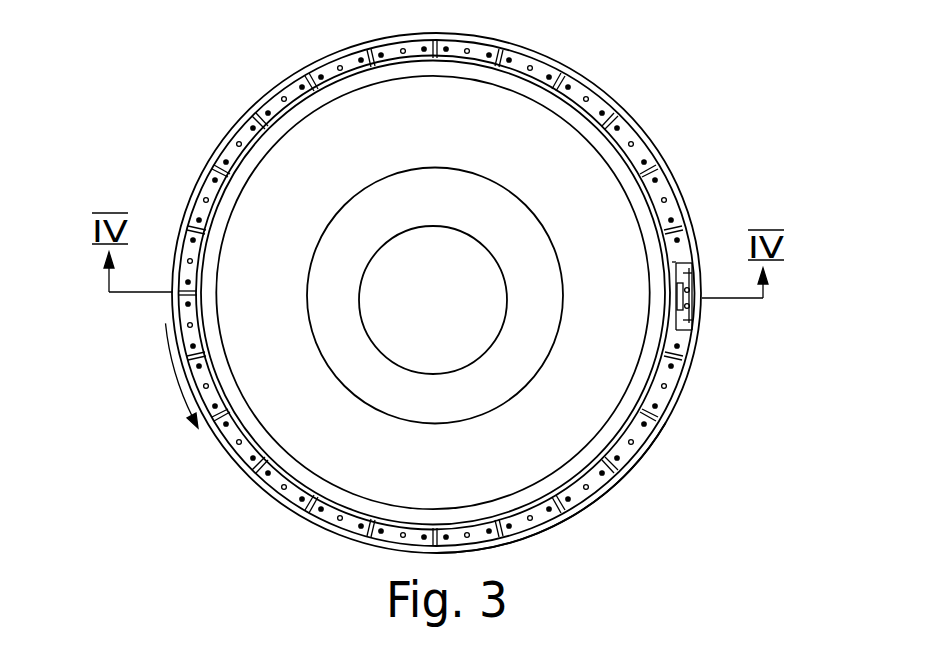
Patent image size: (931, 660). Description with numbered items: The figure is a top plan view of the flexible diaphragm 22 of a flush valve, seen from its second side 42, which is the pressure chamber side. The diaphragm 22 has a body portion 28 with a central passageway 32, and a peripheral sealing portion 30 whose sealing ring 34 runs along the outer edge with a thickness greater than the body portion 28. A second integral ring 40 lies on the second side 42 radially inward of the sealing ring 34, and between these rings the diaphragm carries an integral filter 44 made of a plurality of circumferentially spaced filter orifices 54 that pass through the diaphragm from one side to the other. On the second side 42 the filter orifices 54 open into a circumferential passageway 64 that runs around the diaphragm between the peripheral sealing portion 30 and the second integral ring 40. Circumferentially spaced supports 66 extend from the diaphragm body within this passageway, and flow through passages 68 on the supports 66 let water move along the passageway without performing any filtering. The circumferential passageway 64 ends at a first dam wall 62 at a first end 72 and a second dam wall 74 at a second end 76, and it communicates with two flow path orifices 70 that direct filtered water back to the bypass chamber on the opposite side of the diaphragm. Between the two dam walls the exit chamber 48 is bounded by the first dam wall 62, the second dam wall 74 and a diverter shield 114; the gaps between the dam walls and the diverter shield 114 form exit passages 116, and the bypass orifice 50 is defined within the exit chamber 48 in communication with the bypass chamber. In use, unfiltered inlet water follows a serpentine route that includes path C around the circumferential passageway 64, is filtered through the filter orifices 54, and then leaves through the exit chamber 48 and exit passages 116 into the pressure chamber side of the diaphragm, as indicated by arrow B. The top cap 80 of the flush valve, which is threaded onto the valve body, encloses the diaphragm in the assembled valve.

The flexible diaphragm 22 is at (212, 125).
The body portion 28 is at (347, 232).
The peripheral sealing portion 30 is at (247, 467).
The central passageway 32 is at (424, 334).
The sealing ring 34 is at (538, 545).
The second integral ring 40 is at (658, 386).
The second side 42 is at (335, 128).
The integral filter 44 is at (553, 57).
The exit chamber 48 is at (693, 306).
The bypass orifice 50 is at (690, 278).
The filter orifices 54 is at (670, 195).
The first dam wall 62 is at (665, 343).
The circumferential passageway 64 is at (640, 432).
The circumferential supports 66 is at (613, 104).
The flow through passages 68 is at (603, 467).
The flow path orifice 70 is at (693, 257).
The first end 72 is at (690, 350).
The second dam wall 74 is at (672, 265).
The second end 76 is at (692, 264).
The top cap 80 is at (465, 543).
The diverter shield 114 is at (676, 297).
The exit passage 116 is at (676, 290).
The arrow B is at (649, 265).
The path C is at (178, 382).